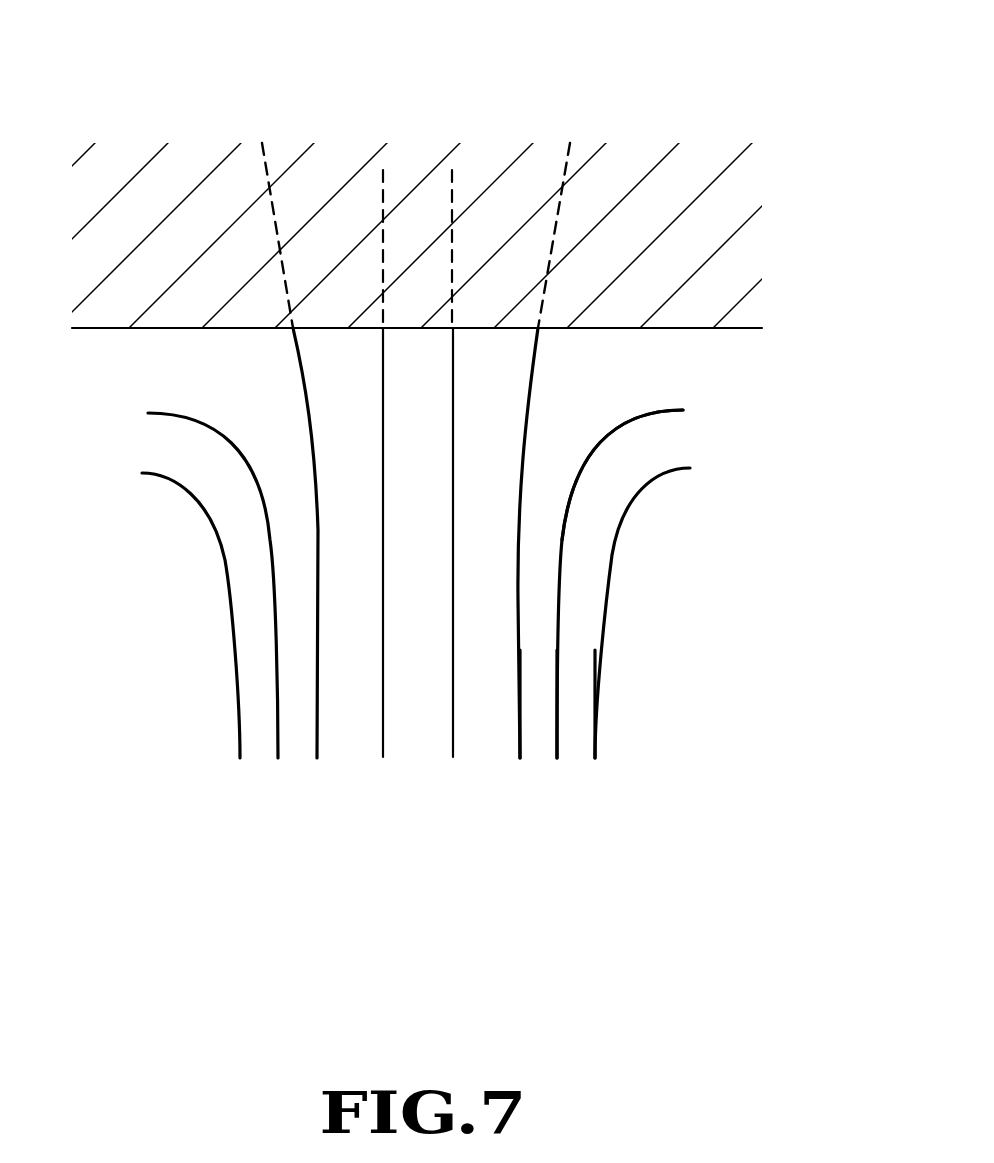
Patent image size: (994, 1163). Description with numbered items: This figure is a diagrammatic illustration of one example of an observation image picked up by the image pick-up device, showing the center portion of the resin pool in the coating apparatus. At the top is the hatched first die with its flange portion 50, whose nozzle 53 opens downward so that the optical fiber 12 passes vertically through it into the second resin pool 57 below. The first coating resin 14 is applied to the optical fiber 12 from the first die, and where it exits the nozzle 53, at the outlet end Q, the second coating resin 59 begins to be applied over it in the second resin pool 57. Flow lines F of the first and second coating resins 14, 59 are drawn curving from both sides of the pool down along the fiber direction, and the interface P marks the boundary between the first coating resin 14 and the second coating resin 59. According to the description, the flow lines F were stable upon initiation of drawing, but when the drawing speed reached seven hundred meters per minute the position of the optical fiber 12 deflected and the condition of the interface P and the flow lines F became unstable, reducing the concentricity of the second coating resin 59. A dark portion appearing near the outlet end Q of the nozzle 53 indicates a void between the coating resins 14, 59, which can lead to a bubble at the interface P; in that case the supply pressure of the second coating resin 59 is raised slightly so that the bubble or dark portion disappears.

The flange portion 50 is at (656, 187).
The nozzle 53 is at (277, 215).
The second resin pool 57 is at (85, 388).
The second coating resin 59 is at (668, 445).
The first coating resin 14 is at (483, 700).
The optical fiber 12 is at (427, 728).
The interface P is at (294, 661).
The outlet end Q is at (563, 352).
The flow lines F is at (245, 458).